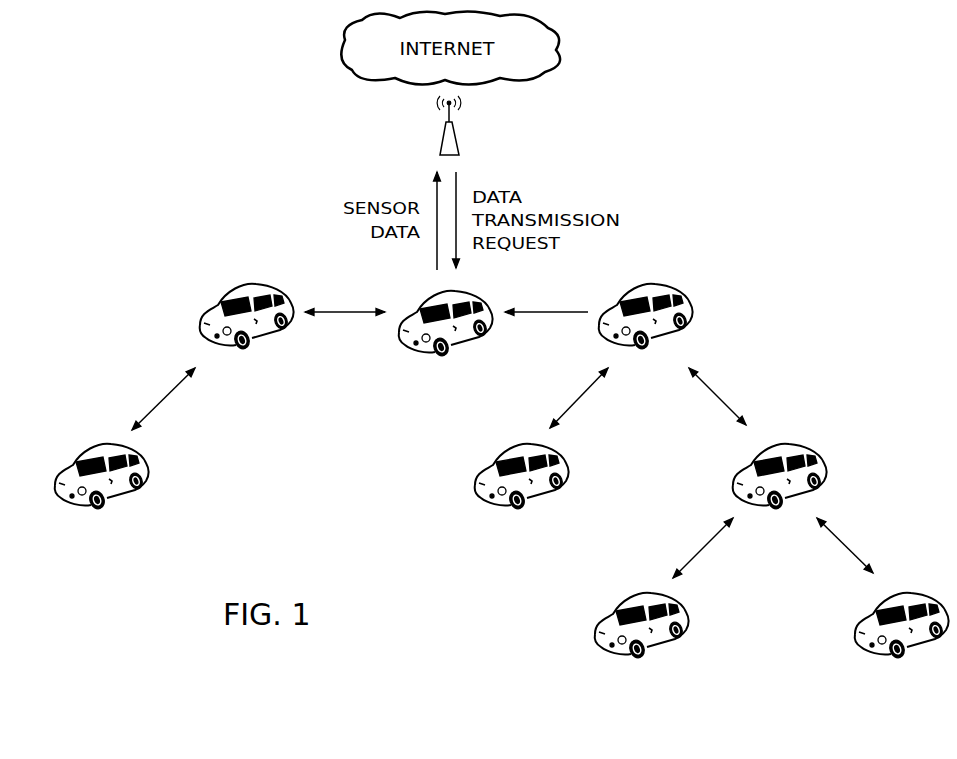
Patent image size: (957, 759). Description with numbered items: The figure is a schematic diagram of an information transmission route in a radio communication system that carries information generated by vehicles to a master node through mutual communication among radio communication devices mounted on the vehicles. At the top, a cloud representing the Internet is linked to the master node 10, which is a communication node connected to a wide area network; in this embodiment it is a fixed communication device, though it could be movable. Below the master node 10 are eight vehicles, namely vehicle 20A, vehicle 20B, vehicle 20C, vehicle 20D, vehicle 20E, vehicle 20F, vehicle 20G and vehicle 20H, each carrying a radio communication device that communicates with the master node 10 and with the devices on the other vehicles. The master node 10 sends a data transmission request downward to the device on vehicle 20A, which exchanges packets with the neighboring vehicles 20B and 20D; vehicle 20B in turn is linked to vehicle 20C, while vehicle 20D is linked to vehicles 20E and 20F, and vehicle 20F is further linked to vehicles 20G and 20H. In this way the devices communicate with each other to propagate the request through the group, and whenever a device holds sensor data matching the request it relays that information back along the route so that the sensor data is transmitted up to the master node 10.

The master node 10 is at (527, 125).
The vehicle 20A is at (446, 353).
The vehicle 20B is at (247, 347).
The vehicle 20C is at (102, 508).
The vehicle 20D is at (646, 347).
The vehicle 20E is at (522, 508).
The vehicle 20F is at (780, 508).
The vehicle 20G is at (642, 657).
The vehicle 20H is at (902, 657).